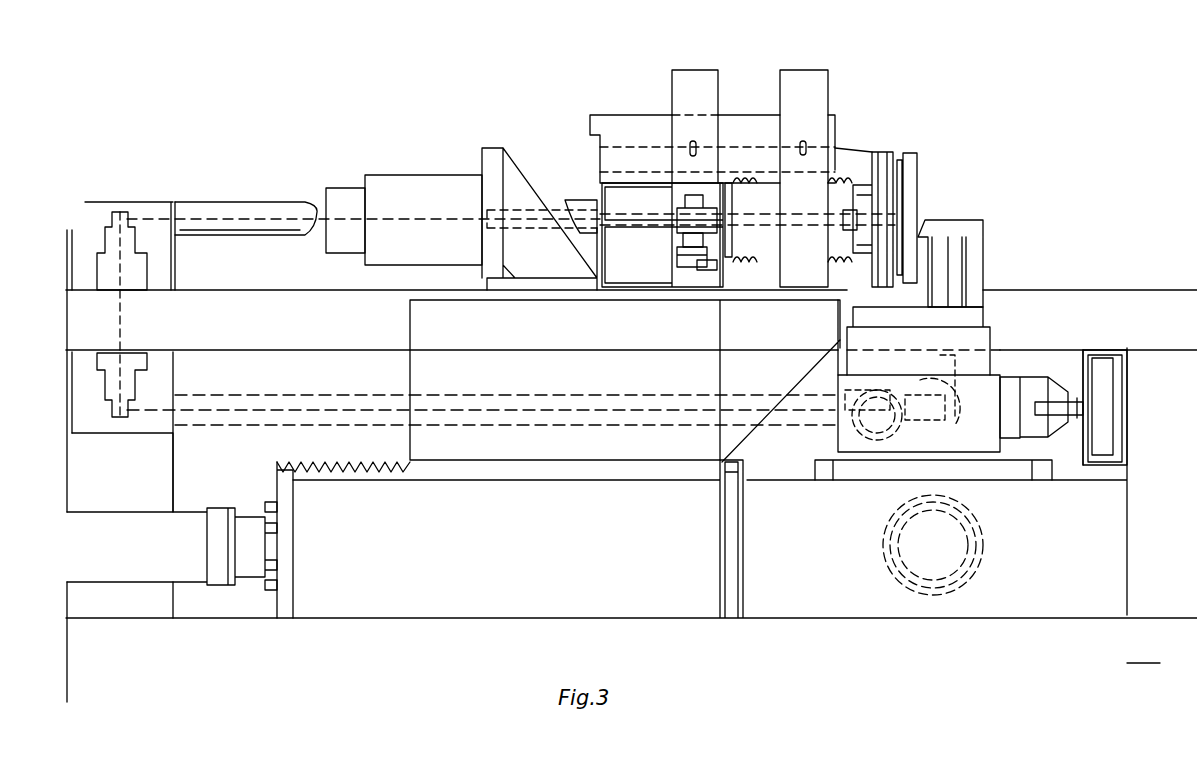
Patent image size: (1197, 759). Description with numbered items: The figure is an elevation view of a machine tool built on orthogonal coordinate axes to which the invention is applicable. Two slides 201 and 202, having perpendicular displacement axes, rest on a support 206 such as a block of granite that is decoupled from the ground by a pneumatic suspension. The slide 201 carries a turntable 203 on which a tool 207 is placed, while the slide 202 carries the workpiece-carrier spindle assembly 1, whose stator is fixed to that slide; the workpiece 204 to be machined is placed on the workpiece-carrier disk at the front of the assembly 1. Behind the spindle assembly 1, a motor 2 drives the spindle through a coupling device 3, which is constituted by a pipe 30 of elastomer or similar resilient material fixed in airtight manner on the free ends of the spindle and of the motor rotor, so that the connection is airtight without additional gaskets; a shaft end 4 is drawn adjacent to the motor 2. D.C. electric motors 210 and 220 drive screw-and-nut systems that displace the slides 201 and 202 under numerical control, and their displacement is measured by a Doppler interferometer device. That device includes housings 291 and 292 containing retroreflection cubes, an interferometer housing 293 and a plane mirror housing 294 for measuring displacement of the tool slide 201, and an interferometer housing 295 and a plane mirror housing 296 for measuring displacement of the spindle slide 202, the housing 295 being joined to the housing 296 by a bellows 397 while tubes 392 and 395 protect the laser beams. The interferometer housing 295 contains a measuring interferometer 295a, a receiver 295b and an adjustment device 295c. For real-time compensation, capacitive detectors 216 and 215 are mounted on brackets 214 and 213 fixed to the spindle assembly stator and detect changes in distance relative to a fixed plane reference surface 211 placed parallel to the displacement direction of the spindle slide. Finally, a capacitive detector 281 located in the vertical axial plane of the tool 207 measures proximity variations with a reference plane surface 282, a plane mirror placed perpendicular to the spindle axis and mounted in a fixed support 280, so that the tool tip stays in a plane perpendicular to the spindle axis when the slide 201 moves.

The spindle assembly 1 is at (858, 126).
The motor 2 is at (396, 178).
The coupling device 3 is at (554, 190).
The shaft end 4 is at (333, 188).
The pipe 30 is at (530, 232).
The slide 201 is at (865, 482).
The slide 202 is at (540, 478).
The turntable 203 is at (985, 318).
The workpiece 204 is at (915, 170).
The support 206 is at (1145, 650).
The tool 207 is at (944, 222).
The D.C. electric motor 210 is at (985, 540).
The plane reference surface 211 is at (768, 130).
The bracket 213 is at (817, 80).
The bracket 214 is at (692, 78).
The capacitive detector 215 is at (807, 142).
The capacitive detector 216 is at (697, 141).
The D.C. electric motor 220 is at (122, 520).
The fixed support 280 is at (1110, 457).
The detector 281 is at (1078, 400).
The reference plane surface 282 is at (1115, 395).
The housing 291 is at (120, 202).
The housing 292 is at (176, 275).
The interferometer housing 293 is at (919, 406).
The plane mirror housing 294 is at (1009, 417).
The interferometer housing 295 is at (660, 183).
The measuring interferometer 295a is at (682, 218).
The receiver 295b is at (636, 228).
The adjustment device 295c is at (690, 268).
The plane mirror housing 296 is at (882, 152).
The tube 392 is at (243, 200).
The tube 395 is at (285, 428).
The bellows 397 is at (788, 220).